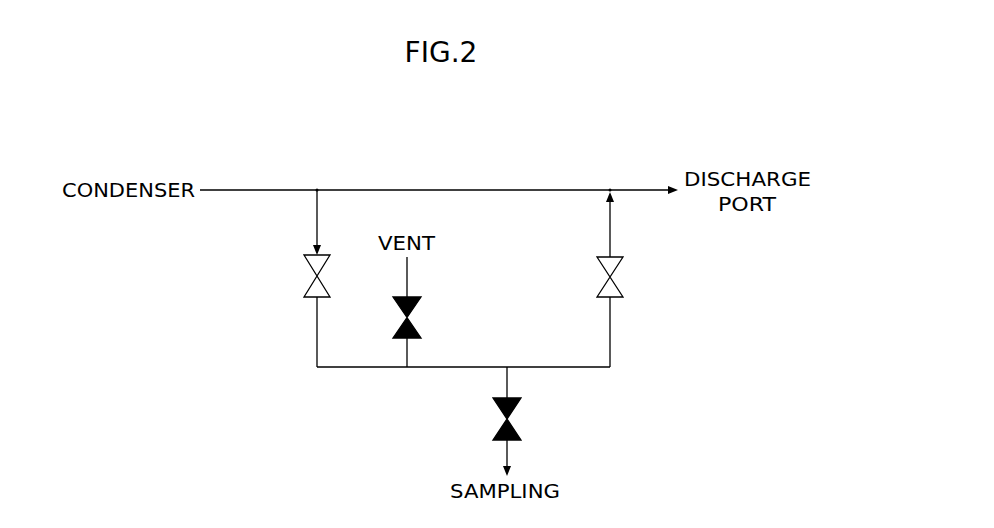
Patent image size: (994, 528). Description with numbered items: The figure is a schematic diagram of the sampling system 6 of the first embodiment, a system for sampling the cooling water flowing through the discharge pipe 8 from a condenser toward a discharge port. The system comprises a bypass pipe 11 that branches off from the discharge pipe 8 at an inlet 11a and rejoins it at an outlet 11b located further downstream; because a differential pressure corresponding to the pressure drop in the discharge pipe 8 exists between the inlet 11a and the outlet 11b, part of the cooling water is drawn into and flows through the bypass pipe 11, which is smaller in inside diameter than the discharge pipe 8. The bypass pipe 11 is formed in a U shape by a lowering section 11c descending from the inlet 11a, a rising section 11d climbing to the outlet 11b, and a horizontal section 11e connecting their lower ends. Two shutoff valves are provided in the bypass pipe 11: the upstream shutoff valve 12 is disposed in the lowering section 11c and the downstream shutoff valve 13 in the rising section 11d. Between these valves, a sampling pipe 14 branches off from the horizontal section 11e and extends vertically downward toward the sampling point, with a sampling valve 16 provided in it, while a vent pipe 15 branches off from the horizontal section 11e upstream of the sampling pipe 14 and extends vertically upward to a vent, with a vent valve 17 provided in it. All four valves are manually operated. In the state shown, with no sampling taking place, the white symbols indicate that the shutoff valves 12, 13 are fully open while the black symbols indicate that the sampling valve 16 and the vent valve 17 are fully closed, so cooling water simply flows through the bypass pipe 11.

The sampling system 6 is at (260, 331).
The discharge pipe 8 is at (460, 185).
The bypass pipe 11 is at (352, 369).
The inlet 11a is at (318, 186).
The outlet 11b is at (611, 186).
The lowering section 11c is at (316, 228).
The rising section 11d is at (609, 228).
The horizontal section 11e is at (465, 365).
The shutoff valve 12 is at (315, 278).
The shutoff valve 13 is at (606, 278).
The sampling pipe 14 is at (505, 457).
The vent pipe 15 is at (405, 280).
The sampling valve 16 is at (505, 418).
The vent valve 17 is at (404, 318).